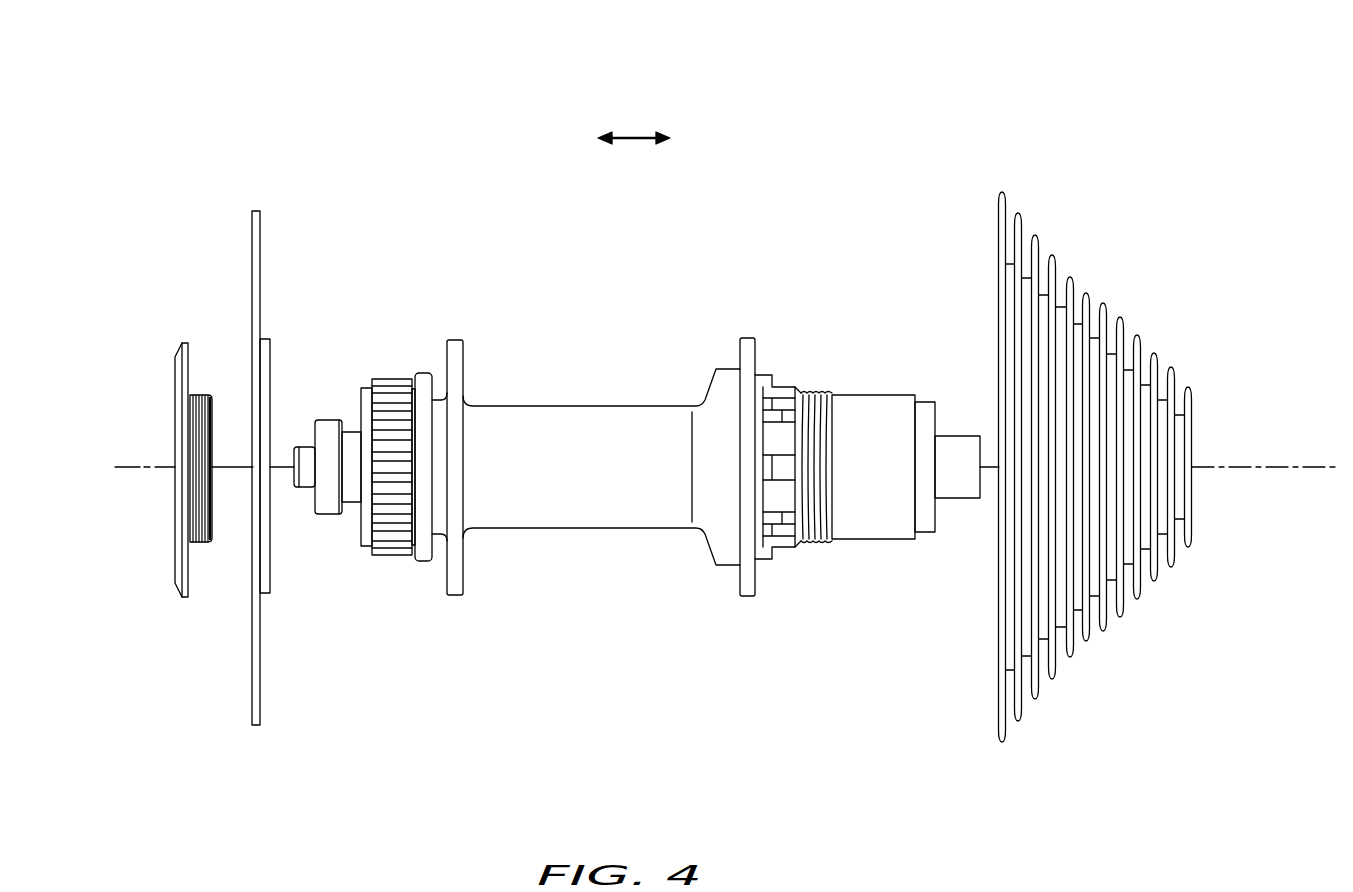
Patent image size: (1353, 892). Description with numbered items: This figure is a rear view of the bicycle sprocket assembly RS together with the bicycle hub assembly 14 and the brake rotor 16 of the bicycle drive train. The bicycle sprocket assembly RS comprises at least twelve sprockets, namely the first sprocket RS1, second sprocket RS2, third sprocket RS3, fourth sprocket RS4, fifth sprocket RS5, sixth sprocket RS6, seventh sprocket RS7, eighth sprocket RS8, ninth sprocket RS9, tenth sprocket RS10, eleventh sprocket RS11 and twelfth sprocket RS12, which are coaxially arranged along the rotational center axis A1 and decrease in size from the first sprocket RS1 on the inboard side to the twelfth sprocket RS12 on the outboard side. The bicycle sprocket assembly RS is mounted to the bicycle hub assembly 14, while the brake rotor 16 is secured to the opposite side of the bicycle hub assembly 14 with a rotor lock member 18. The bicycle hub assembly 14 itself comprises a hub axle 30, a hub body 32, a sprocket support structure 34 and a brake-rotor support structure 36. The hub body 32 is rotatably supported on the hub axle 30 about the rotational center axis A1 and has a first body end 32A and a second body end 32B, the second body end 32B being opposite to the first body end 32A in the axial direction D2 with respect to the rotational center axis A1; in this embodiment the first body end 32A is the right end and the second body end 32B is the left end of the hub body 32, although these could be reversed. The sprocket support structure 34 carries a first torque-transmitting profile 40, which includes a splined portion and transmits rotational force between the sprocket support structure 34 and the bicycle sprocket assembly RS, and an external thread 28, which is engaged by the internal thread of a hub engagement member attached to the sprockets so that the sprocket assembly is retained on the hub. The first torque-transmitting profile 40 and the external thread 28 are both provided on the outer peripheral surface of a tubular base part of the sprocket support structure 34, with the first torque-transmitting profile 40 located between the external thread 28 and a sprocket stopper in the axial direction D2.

The bicycle hub assembly 14 is at (638, 431).
The brake rotor 16 is at (270, 262).
The rotor lock member 18 is at (181, 337).
The external thread 28 is at (820, 390).
The hub axle 30 is at (955, 420).
The hub body 32 is at (587, 431).
The first body end 32A is at (748, 336).
The second body end 32B is at (456, 339).
The sprocket support structure 34 is at (860, 368).
The brake-rotor support structure 36 is at (388, 362).
The first torque-transmitting profile 40 is at (782, 383).
The bicycle sprocket assembly RS is at (1121, 400).
The first sprocket RS1 is at (1001, 191).
The second sprocket RS2 is at (1018, 212).
The third sprocket RS3 is at (1035, 235).
The fourth sprocket RS4 is at (1052, 255).
The fifth sprocket RS5 is at (1070, 277).
The sixth sprocket RS6 is at (1086, 293).
The seventh sprocket RS7 is at (1103, 303).
The eighth sprocket RS8 is at (1120, 317).
The ninth sprocket RS9 is at (1137, 335).
The tenth sprocket RS10 is at (1154, 353).
The eleventh sprocket RS11 is at (1171, 367).
The twelfth sprocket RS12 is at (1188, 387).
The rotational center axis A1 is at (1320, 465).
The axial direction D2 is at (630, 137).